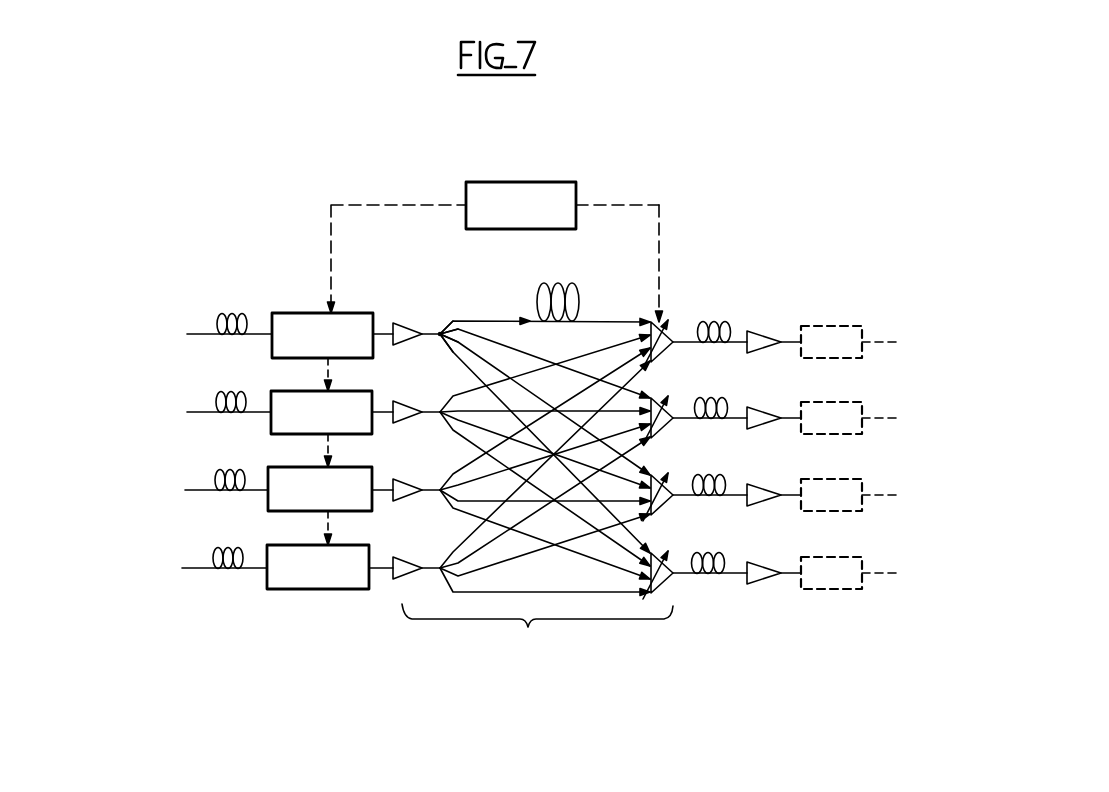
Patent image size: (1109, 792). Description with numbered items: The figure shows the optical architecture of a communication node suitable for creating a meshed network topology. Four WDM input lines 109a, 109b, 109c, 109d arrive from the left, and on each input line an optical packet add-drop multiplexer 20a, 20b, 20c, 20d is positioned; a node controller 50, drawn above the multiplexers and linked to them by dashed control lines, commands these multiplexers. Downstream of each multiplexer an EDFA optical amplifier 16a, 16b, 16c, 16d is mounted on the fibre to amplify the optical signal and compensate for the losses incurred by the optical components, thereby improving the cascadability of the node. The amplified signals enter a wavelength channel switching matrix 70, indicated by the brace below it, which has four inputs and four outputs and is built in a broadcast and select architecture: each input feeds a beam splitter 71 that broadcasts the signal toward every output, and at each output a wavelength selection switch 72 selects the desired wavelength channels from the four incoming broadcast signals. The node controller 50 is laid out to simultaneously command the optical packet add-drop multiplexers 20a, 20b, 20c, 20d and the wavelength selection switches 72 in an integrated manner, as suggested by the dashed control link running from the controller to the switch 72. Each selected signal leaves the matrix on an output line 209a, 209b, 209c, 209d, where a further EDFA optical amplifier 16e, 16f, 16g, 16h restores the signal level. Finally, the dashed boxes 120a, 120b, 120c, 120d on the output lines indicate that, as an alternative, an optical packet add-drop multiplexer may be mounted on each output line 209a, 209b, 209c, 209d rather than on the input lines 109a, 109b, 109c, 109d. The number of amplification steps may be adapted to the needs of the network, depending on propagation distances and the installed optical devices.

The node controller 50 is at (518, 182).
The input line 109a is at (197, 333).
The input line 109b is at (198, 411).
The input line 109c is at (194, 488).
The input line 109d is at (190, 567).
The optical packet add-drop multiplexer 20a is at (295, 313).
The optical packet add-drop multiplexer 20b is at (294, 391).
The optical packet add-drop multiplexer 20c is at (294, 467).
The optical packet add-drop multiplexer 20d is at (292, 545).
The EDFA optical amplifier 16a is at (405, 323).
The EDFA optical amplifier 16b is at (408, 401).
The EDFA optical amplifier 16c is at (405, 479).
The EDFA optical amplifier 16d is at (401, 557).
The EDFA optical amplifier 16e is at (769, 333).
The EDFA optical amplifier 16f is at (768, 408).
The EDFA optical amplifier 16g is at (770, 487).
The EDFA optical amplifier 16h is at (767, 565).
The beam splitter 71 is at (440, 332).
The wavelength channel switching matrix 70 is at (537, 469).
The wavelength selection switch 72 is at (662, 322).
The output line 209a is at (736, 321).
The output line 209b is at (731, 398).
The output line 209c is at (731, 476).
The output line 209d is at (731, 554).
The optical packet add-drop multiplexer 120a is at (838, 324).
The optical packet add-drop multiplexer 120b is at (842, 402).
The optical packet add-drop multiplexer 120c is at (832, 479).
The optical packet add-drop multiplexer 120d is at (831, 557).